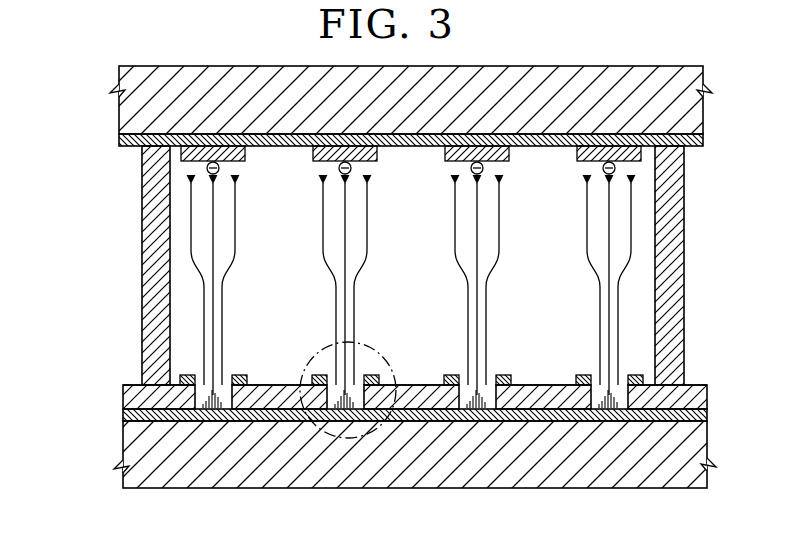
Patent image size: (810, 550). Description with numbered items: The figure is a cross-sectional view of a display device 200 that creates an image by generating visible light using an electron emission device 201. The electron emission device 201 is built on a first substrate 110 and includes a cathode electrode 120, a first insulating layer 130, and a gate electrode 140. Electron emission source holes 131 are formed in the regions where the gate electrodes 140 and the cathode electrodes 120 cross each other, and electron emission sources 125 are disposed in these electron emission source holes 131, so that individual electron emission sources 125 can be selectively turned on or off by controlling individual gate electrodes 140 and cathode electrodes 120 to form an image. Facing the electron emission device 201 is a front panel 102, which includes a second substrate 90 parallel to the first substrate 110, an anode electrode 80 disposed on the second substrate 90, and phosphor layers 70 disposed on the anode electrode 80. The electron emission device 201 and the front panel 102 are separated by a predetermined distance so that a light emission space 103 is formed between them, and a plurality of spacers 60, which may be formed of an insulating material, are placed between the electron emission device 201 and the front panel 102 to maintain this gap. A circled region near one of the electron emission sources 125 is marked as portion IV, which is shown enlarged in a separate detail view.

The second substrate 90 is at (694, 122).
The anode electrode 80 is at (697, 140).
The phosphor layers 70 is at (641, 156).
The spacers 60 is at (677, 312).
The light emission space 103 is at (292, 318).
The front panel 102 is at (128, 159).
The electron emission device 201 is at (129, 376).
The display device 200 is at (74, 216).
The first insulating layer 130 is at (697, 398).
The cathode electrode 120 is at (693, 411).
The first substrate 110 is at (698, 443).
The electron emission source 125 is at (455, 392).
The gate electrode 140 is at (566, 388).
The electron emission source holes 131 is at (463, 393).
The portion IV is at (350, 440).